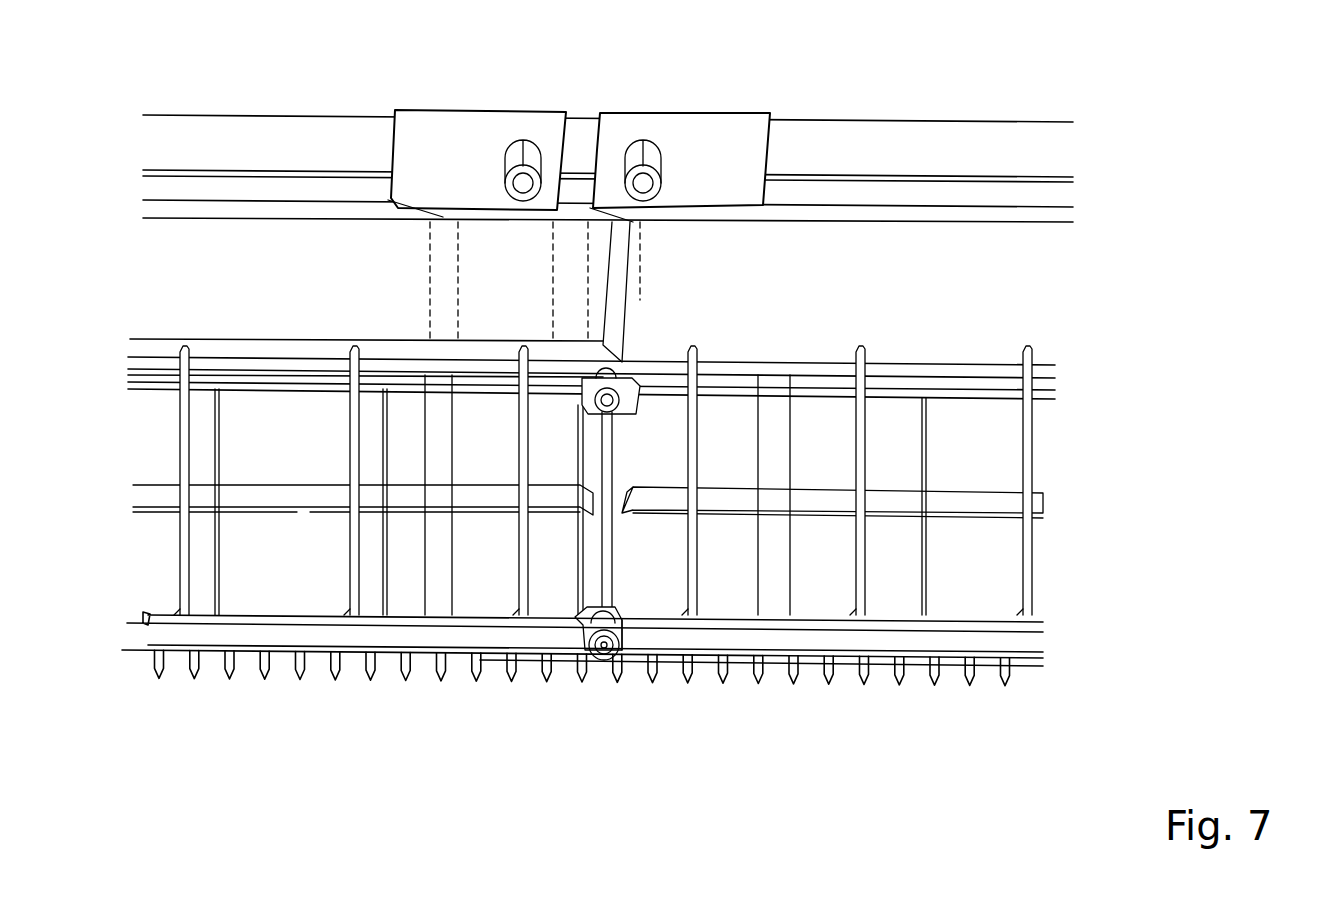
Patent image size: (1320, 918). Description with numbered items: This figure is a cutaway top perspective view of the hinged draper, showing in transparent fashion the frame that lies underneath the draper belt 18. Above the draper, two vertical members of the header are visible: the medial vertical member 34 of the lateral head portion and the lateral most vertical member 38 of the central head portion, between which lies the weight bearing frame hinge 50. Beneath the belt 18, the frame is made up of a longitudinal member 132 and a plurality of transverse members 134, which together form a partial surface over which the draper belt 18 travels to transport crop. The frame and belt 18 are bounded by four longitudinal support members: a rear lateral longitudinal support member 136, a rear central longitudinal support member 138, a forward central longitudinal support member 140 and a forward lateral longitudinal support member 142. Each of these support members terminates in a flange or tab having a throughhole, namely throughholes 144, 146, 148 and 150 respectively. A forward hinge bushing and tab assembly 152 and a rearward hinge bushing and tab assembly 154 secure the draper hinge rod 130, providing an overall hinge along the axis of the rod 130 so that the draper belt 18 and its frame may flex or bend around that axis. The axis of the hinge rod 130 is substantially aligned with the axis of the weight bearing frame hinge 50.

The draper belt 18 is at (998, 573).
The medial vertical member 34 is at (697, 135).
The lateral most vertical member 38 is at (481, 128).
The weight bearing frame hinge 50 is at (597, 88).
The draper hinge rod 130 is at (517, 618).
The longitudinal member 132 is at (917, 492).
The transverse member 134 is at (780, 572).
The rear lateral longitudinal support member 136 is at (896, 380).
The rear central longitudinal support member 138 is at (262, 375).
The forward central longitudinal support member 140 is at (386, 618).
The forward lateral longitudinal support member 142 is at (715, 625).
The throughhole 144 is at (630, 398).
The throughhole 146 is at (590, 385).
The throughhole 148 is at (592, 655).
The throughhole 150 is at (622, 632).
The forward hinge bushing and tab assembly 152 is at (610, 650).
The rearward hinge bushing and tab assembly 154 is at (640, 380).